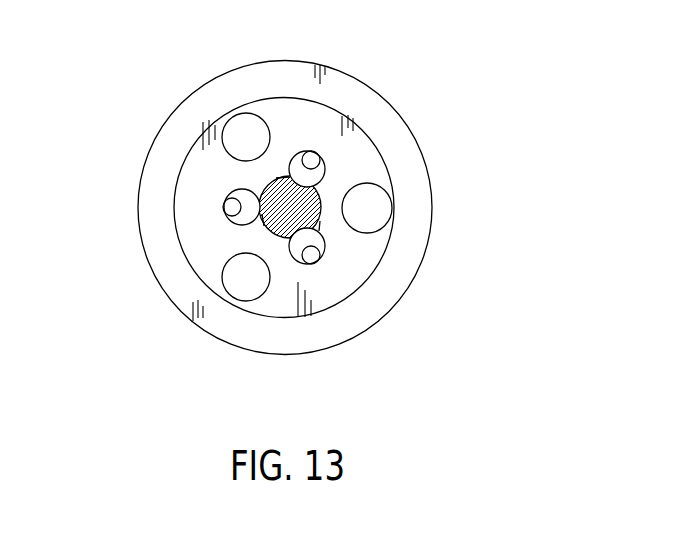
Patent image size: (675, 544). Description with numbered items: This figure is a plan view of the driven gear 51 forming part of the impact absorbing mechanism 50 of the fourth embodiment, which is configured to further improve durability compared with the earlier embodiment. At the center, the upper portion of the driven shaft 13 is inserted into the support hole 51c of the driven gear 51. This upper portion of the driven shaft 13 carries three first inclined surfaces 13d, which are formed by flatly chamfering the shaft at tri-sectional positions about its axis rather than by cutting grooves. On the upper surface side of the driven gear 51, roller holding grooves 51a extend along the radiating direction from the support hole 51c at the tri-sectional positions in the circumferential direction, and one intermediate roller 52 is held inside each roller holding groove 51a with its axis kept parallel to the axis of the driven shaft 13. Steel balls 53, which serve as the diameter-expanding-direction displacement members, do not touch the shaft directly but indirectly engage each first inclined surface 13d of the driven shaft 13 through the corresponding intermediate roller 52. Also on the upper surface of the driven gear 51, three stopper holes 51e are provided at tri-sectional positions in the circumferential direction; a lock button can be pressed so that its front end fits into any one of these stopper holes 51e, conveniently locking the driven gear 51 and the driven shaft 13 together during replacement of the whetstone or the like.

The driven shaft 13 is at (320, 188).
The first inclined surface 13d is at (283, 175).
The impact absorbing mechanism 50 is at (389, 84).
The driven gear 51 is at (188, 211).
The roller holding groove 51a is at (320, 157).
The support hole 51c is at (280, 178).
The stopper hole 51e is at (241, 137).
The intermediate roller 52 is at (298, 163).
The steel ball 53 is at (318, 160).